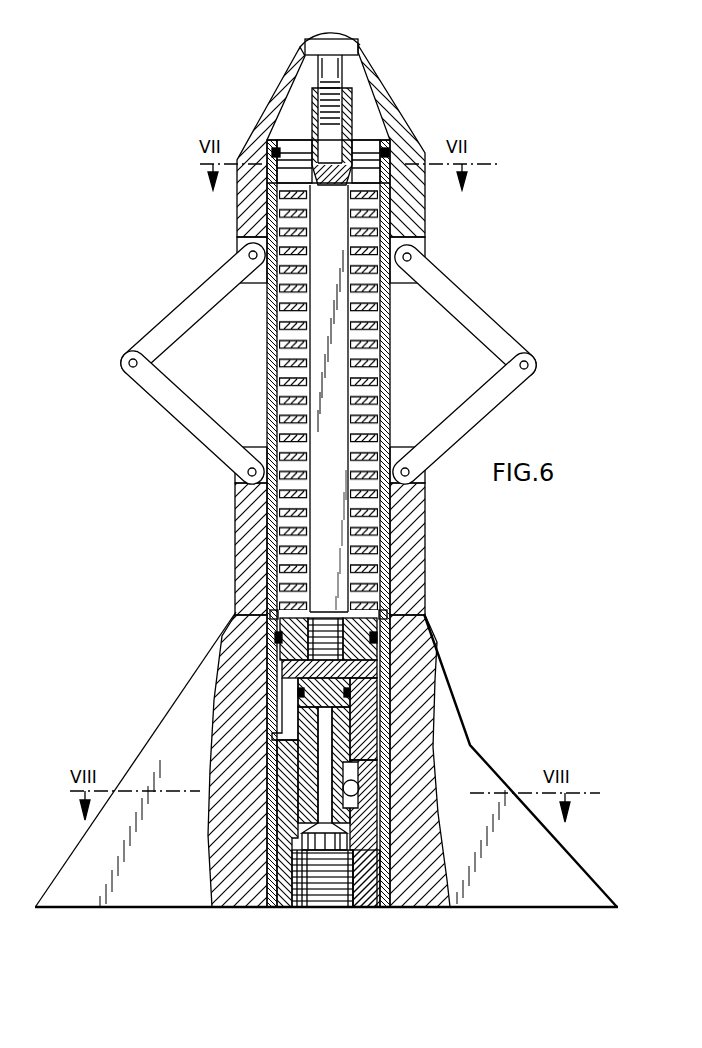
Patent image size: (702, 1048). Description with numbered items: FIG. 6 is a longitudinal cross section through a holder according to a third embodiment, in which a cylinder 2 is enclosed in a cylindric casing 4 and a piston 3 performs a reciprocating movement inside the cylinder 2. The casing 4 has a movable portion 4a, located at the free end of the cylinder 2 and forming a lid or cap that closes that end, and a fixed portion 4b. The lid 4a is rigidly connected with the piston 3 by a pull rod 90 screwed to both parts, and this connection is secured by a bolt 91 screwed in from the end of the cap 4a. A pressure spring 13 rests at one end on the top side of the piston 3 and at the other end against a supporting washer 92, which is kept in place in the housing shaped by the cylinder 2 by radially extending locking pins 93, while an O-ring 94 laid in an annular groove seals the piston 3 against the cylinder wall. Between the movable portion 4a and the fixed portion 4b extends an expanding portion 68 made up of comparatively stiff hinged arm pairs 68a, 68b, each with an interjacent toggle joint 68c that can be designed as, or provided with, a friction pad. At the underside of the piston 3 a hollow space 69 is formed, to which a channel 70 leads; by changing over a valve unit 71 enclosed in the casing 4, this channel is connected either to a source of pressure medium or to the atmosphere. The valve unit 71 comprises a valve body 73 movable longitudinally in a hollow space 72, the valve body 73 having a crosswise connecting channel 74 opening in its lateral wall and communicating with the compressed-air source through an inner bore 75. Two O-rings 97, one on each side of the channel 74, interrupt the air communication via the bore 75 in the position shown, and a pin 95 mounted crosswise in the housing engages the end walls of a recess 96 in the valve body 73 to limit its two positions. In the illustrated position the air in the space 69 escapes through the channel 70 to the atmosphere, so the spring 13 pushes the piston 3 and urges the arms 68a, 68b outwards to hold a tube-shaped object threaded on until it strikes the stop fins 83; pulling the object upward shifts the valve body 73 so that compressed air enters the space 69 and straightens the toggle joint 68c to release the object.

The cylinder 2 is at (392, 501).
The piston 3 is at (277, 622).
The casing 4 is at (410, 563).
The movable portion of the casing 4a is at (408, 229).
The fixed portion of the casing 4b is at (362, 695).
The pressure spring 13 is at (406, 166).
The expanding portion 68 is at (501, 364).
The hinged arm 68a is at (478, 295).
The hinged arm 68b is at (480, 414).
The toggle joint 68c is at (533, 366).
The hollow space 69 is at (378, 648).
The channel 70 is at (290, 700).
The valve unit 71 is at (283, 910).
The hollow space 72 is at (333, 769).
The valve body 73 is at (366, 898).
The connecting channel 74 is at (290, 746).
The inner bore 75 is at (343, 909).
The stop fins 83 is at (563, 878).
The pull rod 90 is at (330, 284).
The bolt 91 is at (332, 58).
The supporting washer 92 is at (363, 168).
The locking pins 93 is at (325, 153).
The O-ring 94 is at (377, 632).
The pin 95 is at (400, 815).
The recess 96 is at (352, 731).
The O-rings 97 is at (352, 719).